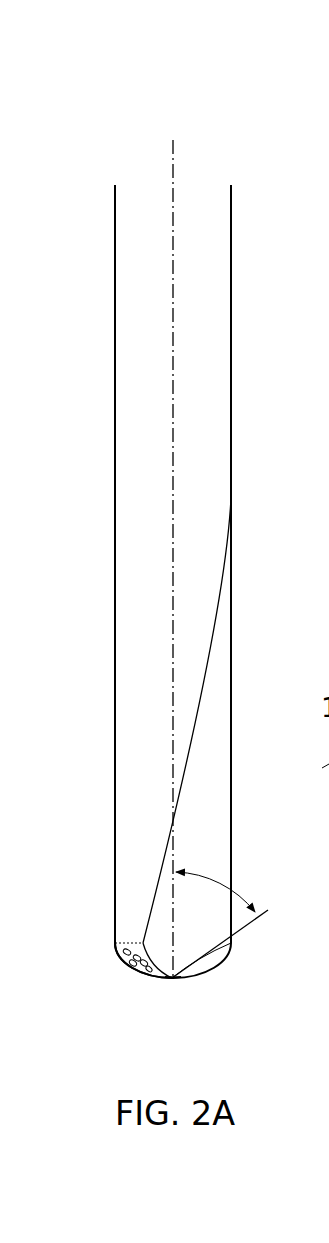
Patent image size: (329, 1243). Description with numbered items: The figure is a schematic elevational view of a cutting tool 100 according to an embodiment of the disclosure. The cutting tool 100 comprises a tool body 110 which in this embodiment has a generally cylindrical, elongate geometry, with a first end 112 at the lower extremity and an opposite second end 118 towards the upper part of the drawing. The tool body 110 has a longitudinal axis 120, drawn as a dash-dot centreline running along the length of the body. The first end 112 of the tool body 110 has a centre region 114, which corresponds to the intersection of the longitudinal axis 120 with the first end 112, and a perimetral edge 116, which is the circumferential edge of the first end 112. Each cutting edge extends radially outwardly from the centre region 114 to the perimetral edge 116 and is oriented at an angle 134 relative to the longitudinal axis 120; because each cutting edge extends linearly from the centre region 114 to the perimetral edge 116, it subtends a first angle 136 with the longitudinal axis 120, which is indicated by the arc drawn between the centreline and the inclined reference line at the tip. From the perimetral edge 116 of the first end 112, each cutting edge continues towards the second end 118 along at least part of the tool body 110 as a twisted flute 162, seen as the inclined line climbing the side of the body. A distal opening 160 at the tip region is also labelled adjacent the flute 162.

The cutting tool 100 is at (136, 81).
The tool body 110 is at (115, 590).
The first end 112 is at (108, 979).
The centre region 114 is at (172, 979).
The perimetral edge 116 is at (117, 948).
The second end 118 is at (110, 216).
The longitudinal axis 120 is at (175, 148).
The angle 134 is at (247, 900).
The first angle 136 is at (207, 874).
The distal opening 160 is at (197, 835).
The twisted flute 162 is at (197, 795).